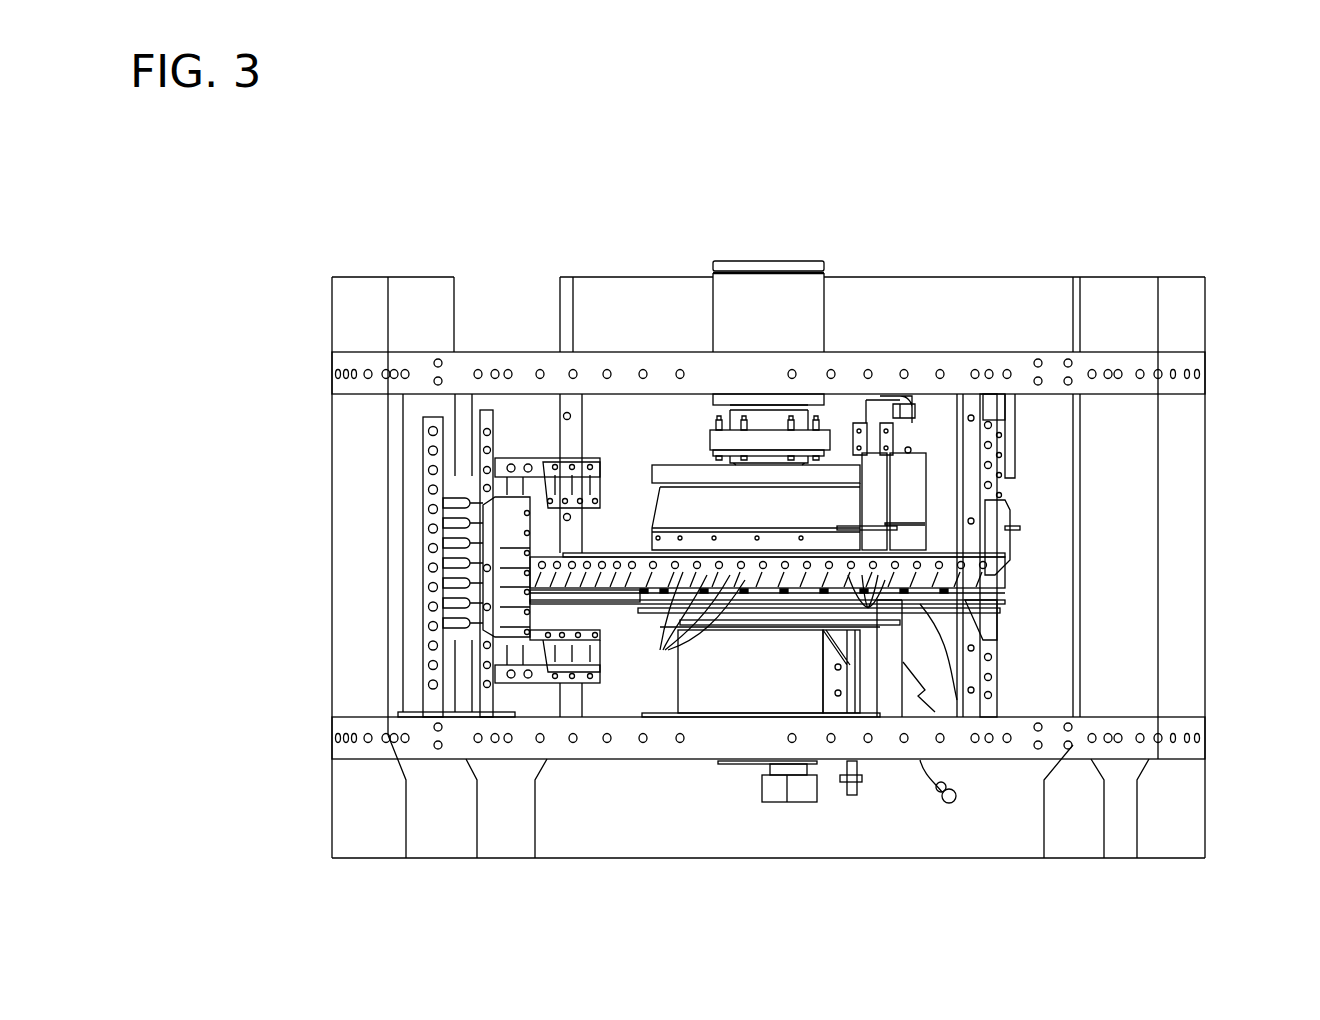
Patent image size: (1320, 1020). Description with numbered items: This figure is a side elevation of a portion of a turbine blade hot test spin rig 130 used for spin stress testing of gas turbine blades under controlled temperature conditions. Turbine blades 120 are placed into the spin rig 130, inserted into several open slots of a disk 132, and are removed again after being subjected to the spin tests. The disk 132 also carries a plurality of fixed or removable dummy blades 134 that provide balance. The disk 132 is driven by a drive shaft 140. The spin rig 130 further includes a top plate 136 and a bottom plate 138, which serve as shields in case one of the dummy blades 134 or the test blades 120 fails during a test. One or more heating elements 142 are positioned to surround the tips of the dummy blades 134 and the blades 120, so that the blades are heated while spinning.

The turbine blade hot test spin rig 130 is at (510, 213).
The drive shaft 140 is at (760, 296).
The top plate 136 is at (474, 358).
The bottom plate 138 is at (516, 748).
The heating elements 142 is at (492, 515).
The disk 132 is at (922, 604).
The dummy blades 134 is at (663, 640).
The turbine blades 120 is at (868, 608).